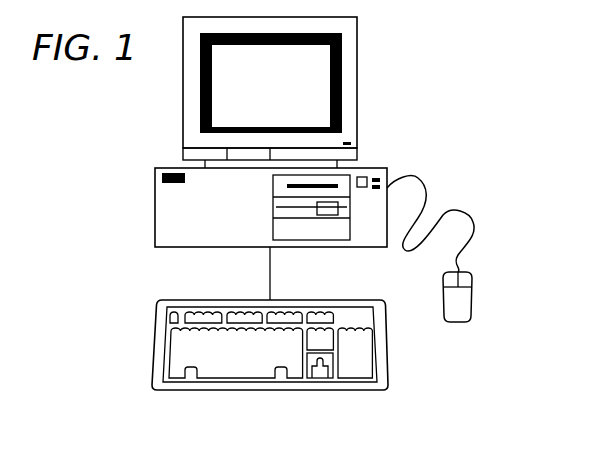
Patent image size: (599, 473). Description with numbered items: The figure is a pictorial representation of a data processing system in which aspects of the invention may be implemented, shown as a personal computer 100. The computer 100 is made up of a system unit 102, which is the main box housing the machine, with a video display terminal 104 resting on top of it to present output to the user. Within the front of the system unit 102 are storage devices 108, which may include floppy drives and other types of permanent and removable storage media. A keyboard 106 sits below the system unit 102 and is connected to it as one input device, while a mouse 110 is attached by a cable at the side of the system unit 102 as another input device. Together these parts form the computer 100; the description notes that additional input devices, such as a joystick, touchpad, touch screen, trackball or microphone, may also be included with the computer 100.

The computer 100 is at (452, 130).
The system unit 102 is at (271, 227).
The video display terminal 104 is at (357, 64).
The keyboard 106 is at (154, 345).
The storage devices 108 is at (273, 205).
The mouse 110 is at (472, 287).